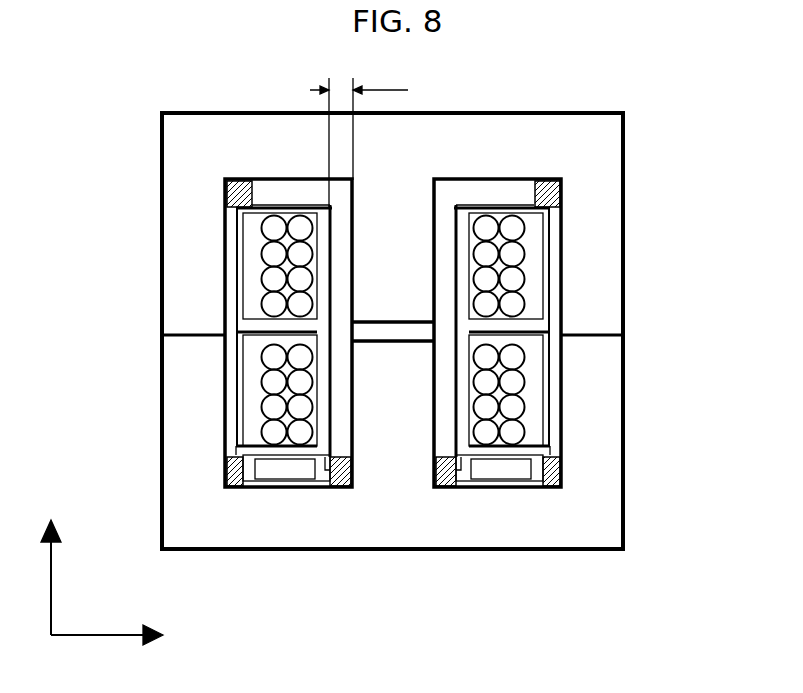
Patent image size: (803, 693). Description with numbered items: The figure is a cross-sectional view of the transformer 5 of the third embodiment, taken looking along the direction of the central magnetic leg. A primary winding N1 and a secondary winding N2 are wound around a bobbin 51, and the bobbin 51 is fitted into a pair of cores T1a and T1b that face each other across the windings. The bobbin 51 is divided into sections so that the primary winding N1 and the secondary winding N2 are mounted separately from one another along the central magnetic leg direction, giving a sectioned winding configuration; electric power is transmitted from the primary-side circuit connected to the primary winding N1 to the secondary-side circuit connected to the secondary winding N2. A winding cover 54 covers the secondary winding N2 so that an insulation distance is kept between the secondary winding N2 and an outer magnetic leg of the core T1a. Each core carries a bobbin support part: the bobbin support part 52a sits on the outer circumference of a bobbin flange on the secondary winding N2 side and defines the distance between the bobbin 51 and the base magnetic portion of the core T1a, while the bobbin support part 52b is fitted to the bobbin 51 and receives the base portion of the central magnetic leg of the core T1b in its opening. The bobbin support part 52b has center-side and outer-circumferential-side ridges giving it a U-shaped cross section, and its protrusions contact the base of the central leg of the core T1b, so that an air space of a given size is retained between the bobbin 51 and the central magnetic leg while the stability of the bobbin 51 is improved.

The transformer 5 is at (106, 107).
The bobbin 51 is at (322, 207).
The bobbin support part 52a is at (240, 178).
The bobbin support part 52b is at (345, 488).
The winding cover 54 is at (234, 262).
The core T1a is at (605, 135).
The core T1b is at (588, 518).
The primary winding N1 is at (523, 431).
The secondary winding N2 is at (527, 280).